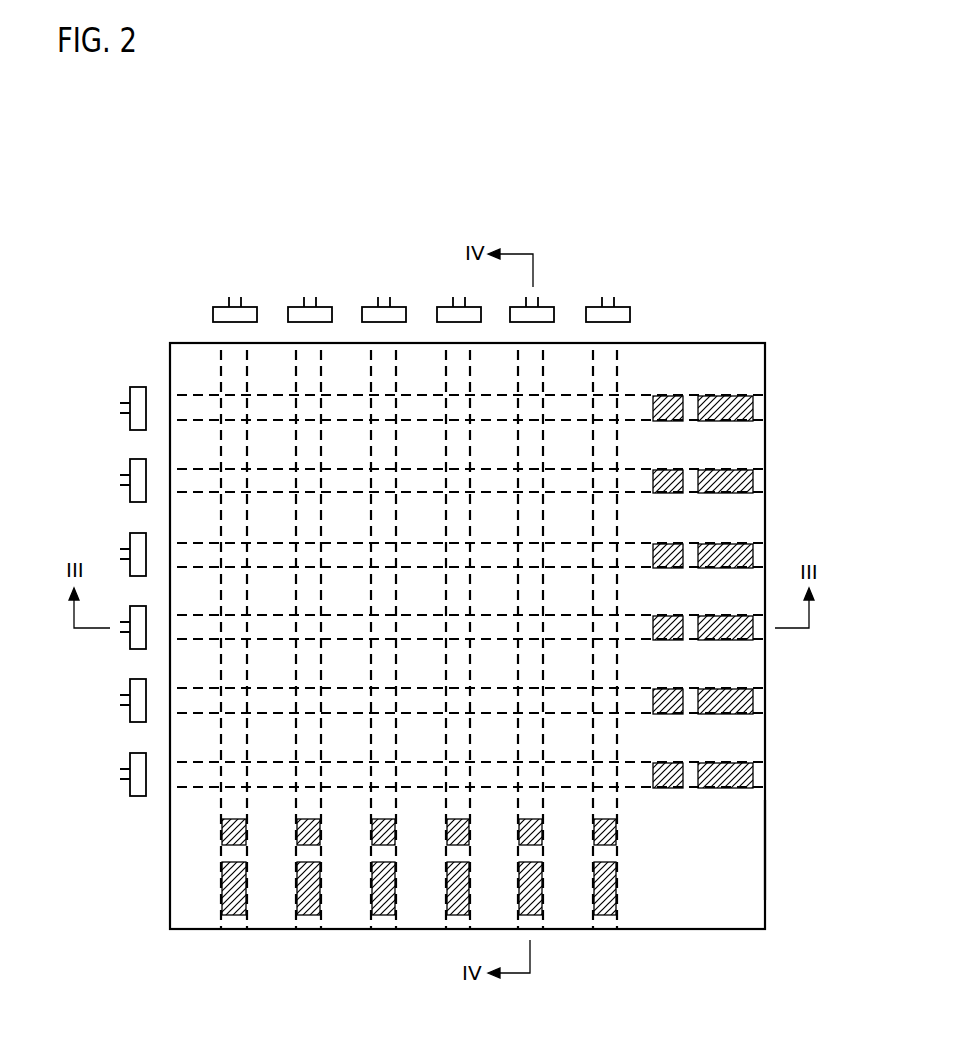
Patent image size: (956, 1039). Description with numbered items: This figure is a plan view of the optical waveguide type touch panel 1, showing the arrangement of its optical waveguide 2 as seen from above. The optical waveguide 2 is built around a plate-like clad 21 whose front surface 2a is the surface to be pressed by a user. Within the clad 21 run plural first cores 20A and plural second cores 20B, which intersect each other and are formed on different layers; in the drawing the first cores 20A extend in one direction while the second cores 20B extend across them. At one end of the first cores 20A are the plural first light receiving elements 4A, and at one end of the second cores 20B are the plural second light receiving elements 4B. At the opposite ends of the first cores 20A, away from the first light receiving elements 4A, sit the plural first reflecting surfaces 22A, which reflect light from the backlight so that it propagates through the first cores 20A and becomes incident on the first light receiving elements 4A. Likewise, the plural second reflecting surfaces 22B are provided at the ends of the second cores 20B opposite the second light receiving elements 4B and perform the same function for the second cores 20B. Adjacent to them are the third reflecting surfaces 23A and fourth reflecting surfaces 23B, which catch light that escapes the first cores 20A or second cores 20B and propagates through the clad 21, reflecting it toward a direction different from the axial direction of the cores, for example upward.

The optical waveguide type touch panel 1 is at (683, 268).
The optical waveguide 2 is at (692, 944).
The surface 2a is at (753, 850).
The clad 21 is at (708, 352).
The first light receiving elements 4A is at (142, 478).
The second light receiving elements 4B is at (377, 306).
The first cores 20A is at (200, 468).
The second cores 20B is at (292, 362).
The first reflecting surfaces 22A is at (733, 398).
The second reflecting surfaces 22B is at (222, 897).
The third reflecting surfaces 23A is at (668, 397).
The fourth reflecting surfaces 23B is at (222, 835).